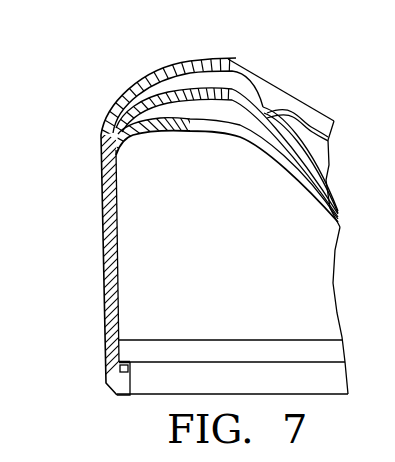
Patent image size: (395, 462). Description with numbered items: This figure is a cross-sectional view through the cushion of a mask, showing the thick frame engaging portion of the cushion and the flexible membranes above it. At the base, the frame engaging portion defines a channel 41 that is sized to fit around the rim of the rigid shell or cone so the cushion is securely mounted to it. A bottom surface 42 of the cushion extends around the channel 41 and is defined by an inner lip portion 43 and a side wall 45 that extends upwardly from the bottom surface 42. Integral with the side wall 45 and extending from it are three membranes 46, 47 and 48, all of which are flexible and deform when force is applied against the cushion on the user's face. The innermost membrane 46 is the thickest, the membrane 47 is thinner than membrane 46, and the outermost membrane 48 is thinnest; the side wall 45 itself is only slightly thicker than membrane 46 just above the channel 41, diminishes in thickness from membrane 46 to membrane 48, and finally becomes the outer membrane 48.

The channel 41 is at (113, 362).
The bottom surface 42 is at (122, 393).
The inner lip portion 43 is at (182, 360).
The side wall 45 is at (102, 205).
The membrane 46 is at (158, 130).
The membrane 47 is at (168, 90).
The membrane 48 is at (278, 106).